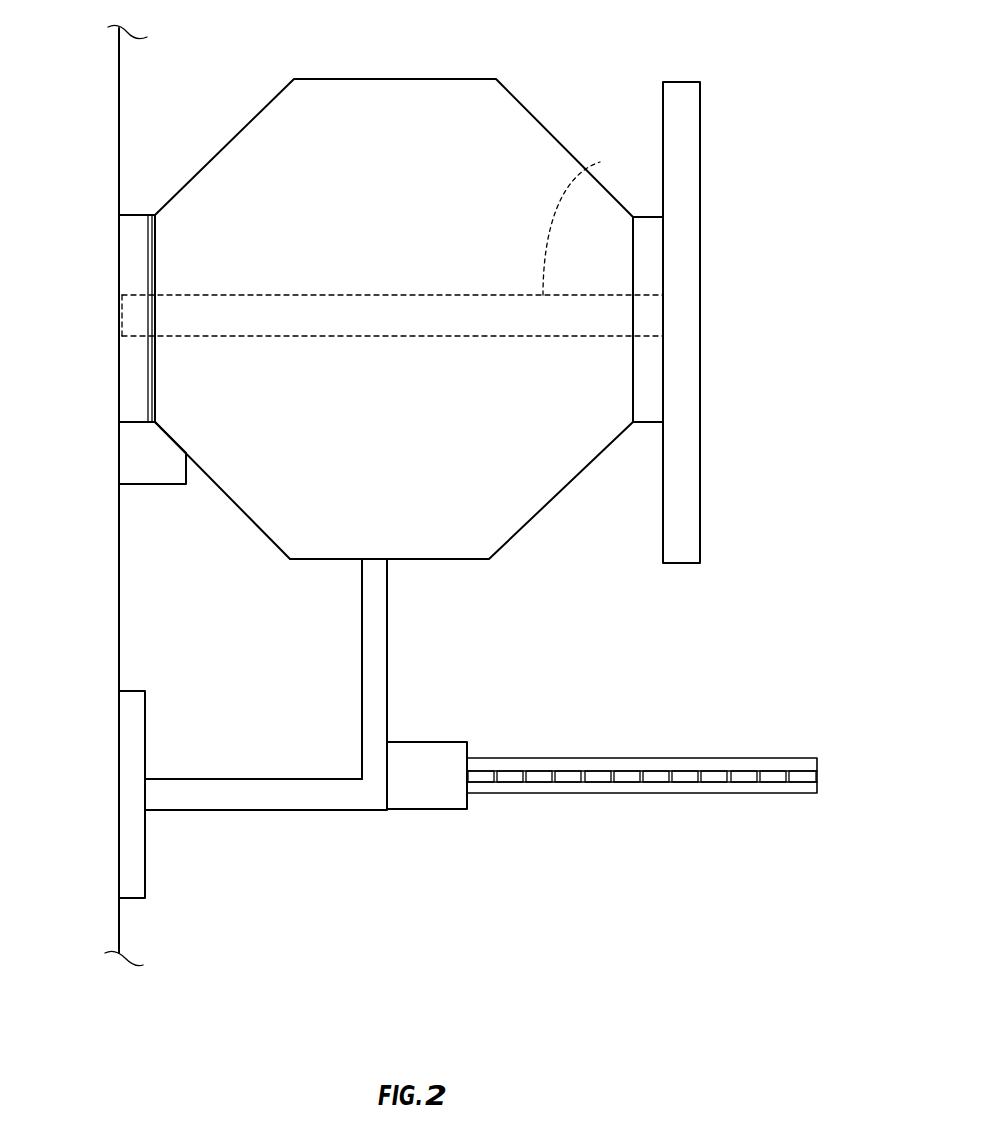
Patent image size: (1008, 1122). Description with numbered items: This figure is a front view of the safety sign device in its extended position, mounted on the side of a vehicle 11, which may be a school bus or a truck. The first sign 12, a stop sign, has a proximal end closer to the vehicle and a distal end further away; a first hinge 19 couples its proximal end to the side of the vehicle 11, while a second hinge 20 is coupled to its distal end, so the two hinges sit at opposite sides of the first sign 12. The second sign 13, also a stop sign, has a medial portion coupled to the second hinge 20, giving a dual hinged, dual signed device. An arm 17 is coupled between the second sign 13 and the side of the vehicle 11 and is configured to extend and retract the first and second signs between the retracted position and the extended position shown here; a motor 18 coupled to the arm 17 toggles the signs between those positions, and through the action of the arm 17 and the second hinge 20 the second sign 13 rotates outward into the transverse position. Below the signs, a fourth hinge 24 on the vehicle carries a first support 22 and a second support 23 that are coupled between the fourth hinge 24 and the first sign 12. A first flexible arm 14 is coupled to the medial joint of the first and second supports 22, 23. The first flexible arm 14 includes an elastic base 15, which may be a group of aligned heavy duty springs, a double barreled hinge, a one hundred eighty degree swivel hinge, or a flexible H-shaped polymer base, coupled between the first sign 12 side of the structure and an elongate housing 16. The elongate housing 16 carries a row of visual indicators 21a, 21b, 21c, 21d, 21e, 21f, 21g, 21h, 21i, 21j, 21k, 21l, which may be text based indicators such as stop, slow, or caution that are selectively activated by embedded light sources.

The vehicle 11 is at (120, 86).
The first sign 12 is at (462, 82).
The second sign 13 is at (685, 86).
The first flexible arm 14 is at (632, 791).
The elastic base 15 is at (450, 747).
The elongate housing 16 is at (750, 762).
The arm 17 is at (597, 161).
The motor 18 is at (136, 475).
The first hinge 19 is at (135, 223).
The second hinge 20 is at (657, 233).
The visual indicator 21a is at (484, 776).
The visual indicator 21b is at (515, 776).
The visual indicator 21c is at (545, 776).
The visual indicator 21d is at (574, 783).
The visual indicator 21e is at (603, 783).
The visual indicator 21f is at (630, 773).
The visual indicator 21g is at (662, 783).
The visual indicator 21h is at (698, 783).
The visual indicator 21i is at (727, 776).
The visual indicator 21j is at (757, 776).
The visual indicator 21k is at (780, 783).
The visual indicator 21l is at (817, 778).
The first support 22 is at (265, 800).
The second support 23 is at (372, 638).
The fourth hinge 24 is at (134, 695).